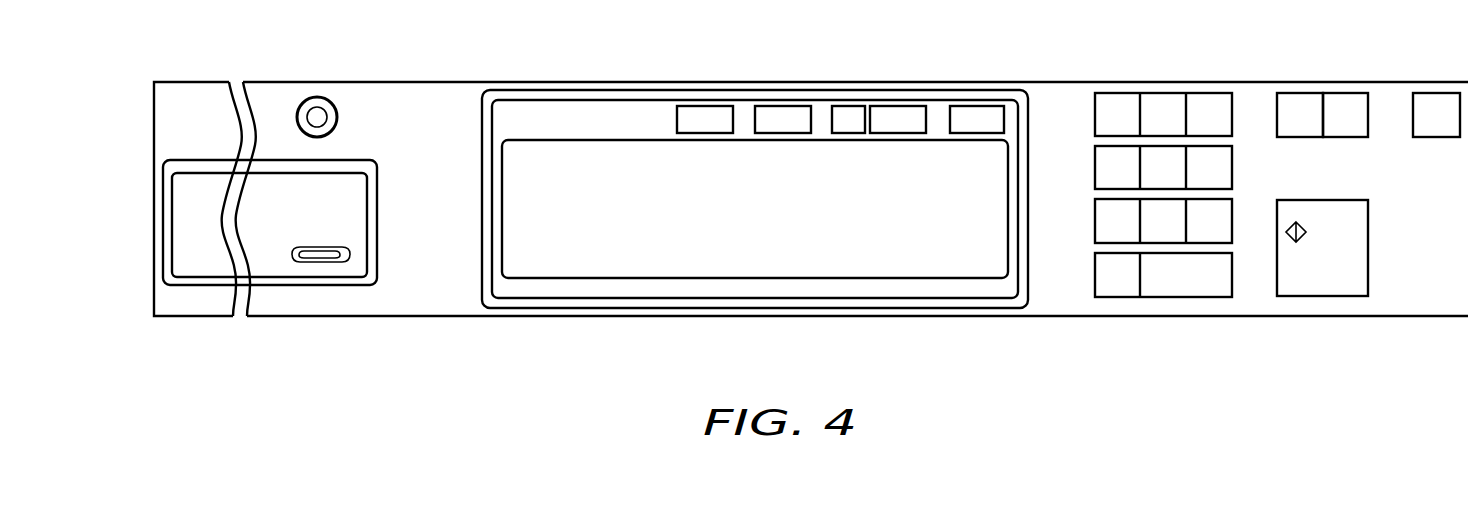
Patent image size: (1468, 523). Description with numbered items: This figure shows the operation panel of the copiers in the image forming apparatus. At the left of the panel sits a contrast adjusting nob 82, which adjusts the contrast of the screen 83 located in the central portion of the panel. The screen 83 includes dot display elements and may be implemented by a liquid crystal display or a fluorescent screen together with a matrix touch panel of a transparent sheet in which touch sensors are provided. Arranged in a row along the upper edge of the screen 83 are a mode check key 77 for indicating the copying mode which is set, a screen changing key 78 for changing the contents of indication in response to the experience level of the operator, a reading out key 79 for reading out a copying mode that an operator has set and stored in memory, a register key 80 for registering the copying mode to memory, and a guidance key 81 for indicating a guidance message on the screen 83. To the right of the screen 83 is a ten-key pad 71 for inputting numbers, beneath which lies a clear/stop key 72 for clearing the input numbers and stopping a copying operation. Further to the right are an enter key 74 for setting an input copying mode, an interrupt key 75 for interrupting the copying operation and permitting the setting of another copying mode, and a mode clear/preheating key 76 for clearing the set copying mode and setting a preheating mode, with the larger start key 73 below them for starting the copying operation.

The ten-key pad 71 is at (1093, 77).
The clear/stop key 72 is at (1177, 288).
The start key 73 is at (1358, 223).
The enter key 74 is at (1298, 98).
The interrupt key 75 is at (1344, 98).
The mode clear/preheating key 76 is at (1435, 98).
The mode check key 77 is at (707, 110).
The screen changing key 78 is at (783, 110).
The reading out key 79 is at (848, 110).
The register key 80 is at (896, 110).
The guidance key 81 is at (972, 110).
The contrast adjusting nob 82 is at (316, 107).
The screen 83 is at (593, 157).